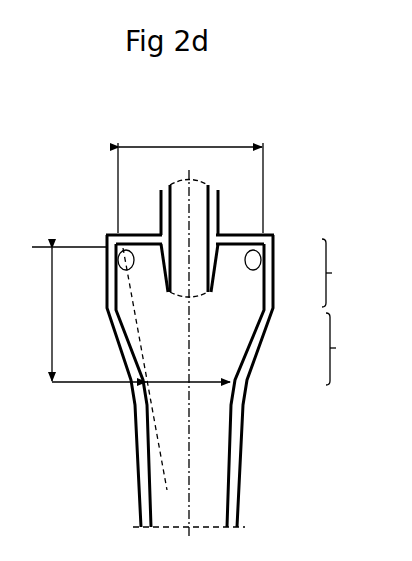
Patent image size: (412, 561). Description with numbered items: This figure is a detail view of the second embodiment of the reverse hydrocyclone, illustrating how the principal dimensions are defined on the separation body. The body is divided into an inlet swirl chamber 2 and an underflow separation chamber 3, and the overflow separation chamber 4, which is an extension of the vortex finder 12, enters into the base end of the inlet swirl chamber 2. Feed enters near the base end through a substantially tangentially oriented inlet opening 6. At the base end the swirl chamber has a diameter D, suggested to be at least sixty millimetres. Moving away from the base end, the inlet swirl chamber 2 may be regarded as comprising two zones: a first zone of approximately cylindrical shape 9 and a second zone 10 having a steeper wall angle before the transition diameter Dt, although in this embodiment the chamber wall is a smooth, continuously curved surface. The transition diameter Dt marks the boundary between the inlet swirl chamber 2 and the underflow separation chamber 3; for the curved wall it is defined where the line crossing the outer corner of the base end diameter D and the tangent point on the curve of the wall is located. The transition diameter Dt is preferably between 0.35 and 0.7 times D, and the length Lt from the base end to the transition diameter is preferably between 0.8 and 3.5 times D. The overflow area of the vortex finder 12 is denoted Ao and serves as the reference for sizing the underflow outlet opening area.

The inlet swirl chamber 2 is at (230, 327).
The underflow separation chamber 3 is at (205, 472).
The overflow separation chamber 4 is at (195, 225).
The inlet opening 6 is at (272, 240).
The cylindrical shape 9 is at (341, 273).
The second zone 10 is at (352, 349).
The vortex finder 12 is at (162, 222).
The swirl chamber diameter D is at (190, 174).
The transition diameter Dt is at (141, 369).
The length from the base end to the transition diameter Lt is at (68, 314).
The vortex finder overflow area Ao is at (185, 275).